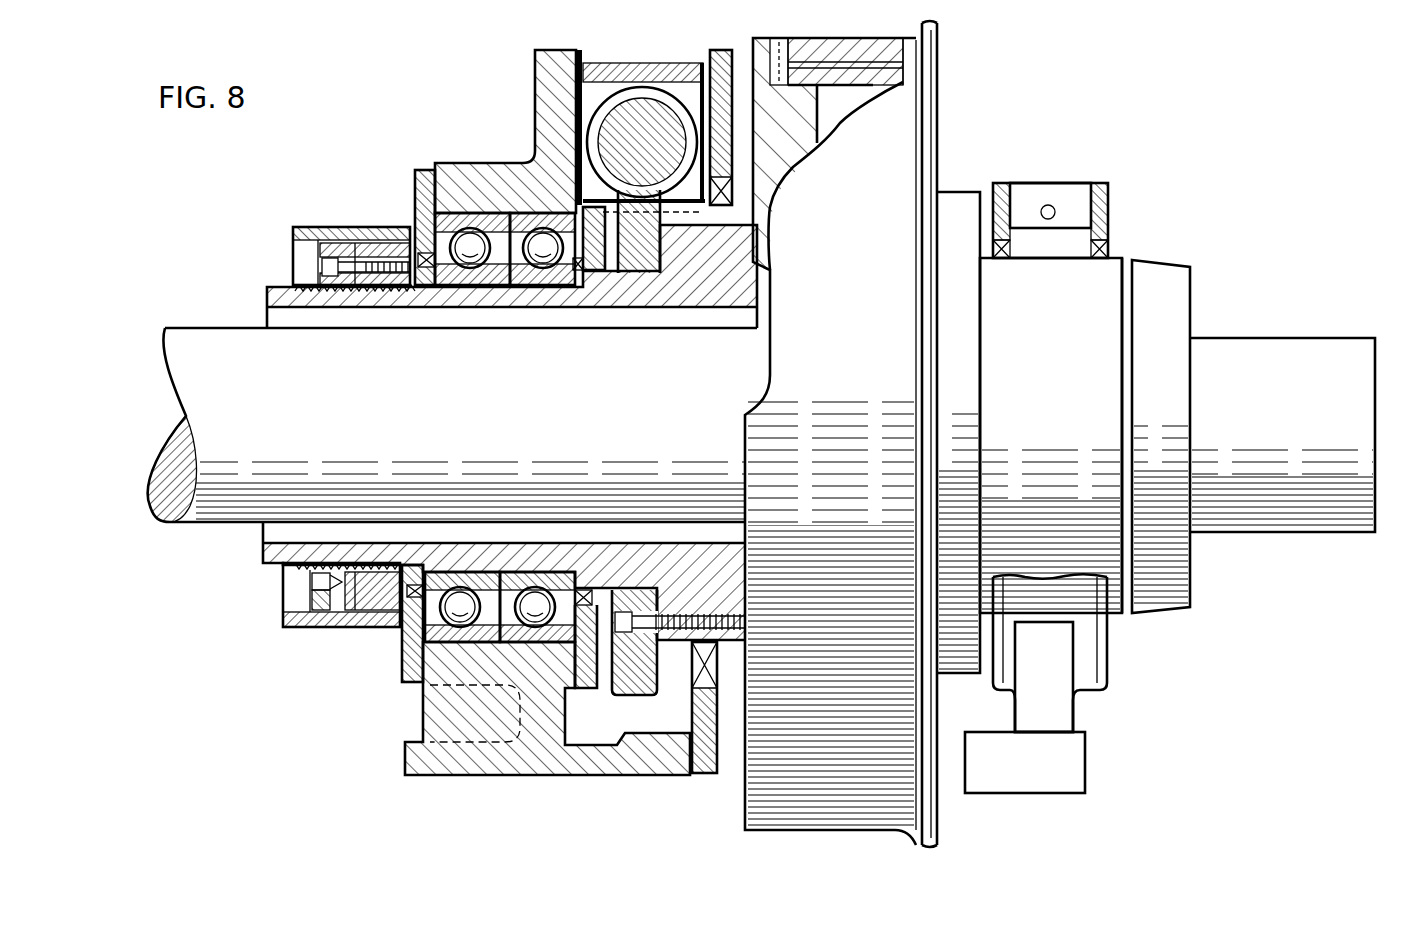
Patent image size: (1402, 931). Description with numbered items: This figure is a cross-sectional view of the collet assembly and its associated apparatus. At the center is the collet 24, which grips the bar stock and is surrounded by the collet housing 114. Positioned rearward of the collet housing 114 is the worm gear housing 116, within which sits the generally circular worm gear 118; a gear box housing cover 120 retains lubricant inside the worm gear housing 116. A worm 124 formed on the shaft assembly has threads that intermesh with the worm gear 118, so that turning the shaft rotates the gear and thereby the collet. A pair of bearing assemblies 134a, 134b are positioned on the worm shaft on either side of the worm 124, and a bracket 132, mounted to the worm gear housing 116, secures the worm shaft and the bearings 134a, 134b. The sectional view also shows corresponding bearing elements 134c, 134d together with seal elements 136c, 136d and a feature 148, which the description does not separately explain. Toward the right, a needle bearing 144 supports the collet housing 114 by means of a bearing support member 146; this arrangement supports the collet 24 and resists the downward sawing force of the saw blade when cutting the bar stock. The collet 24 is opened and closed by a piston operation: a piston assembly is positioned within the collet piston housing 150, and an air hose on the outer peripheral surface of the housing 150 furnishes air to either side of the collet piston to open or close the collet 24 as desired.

The collet 24 is at (1194, 272).
The collet housing 114 is at (1154, 346).
The worm gear housing 116 is at (548, 90).
The worm gear 118 is at (640, 276).
The gear box housing cover 120 is at (698, 776).
The worm 124 is at (658, 116).
The bracket 132 is at (624, 76).
The bearing assembly 134a is at (468, 243).
The bearing assembly 134b is at (540, 238).
The bearing 134c is at (458, 607).
The bearing 134d is at (490, 640).
The spacer 136c is at (590, 276).
The spacer 136d is at (576, 686).
The needle bearing 144 is at (1078, 238).
The bearing support member 146 is at (1035, 190).
The hub bore 148 is at (903, 82).
The collet piston housing 150 is at (932, 820).